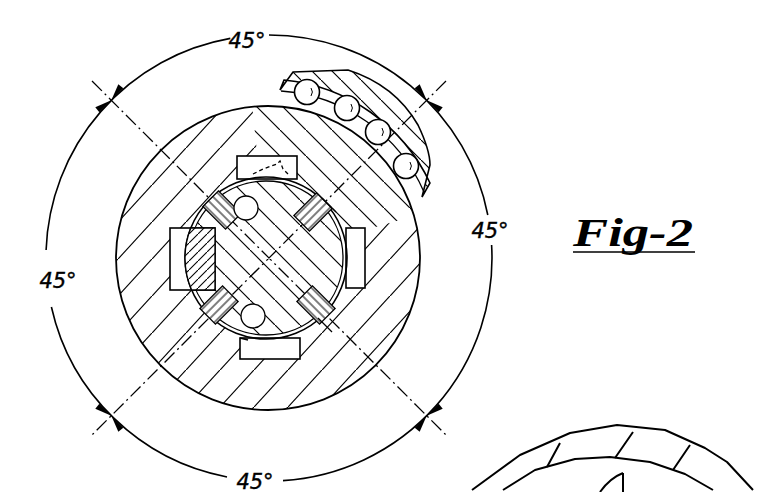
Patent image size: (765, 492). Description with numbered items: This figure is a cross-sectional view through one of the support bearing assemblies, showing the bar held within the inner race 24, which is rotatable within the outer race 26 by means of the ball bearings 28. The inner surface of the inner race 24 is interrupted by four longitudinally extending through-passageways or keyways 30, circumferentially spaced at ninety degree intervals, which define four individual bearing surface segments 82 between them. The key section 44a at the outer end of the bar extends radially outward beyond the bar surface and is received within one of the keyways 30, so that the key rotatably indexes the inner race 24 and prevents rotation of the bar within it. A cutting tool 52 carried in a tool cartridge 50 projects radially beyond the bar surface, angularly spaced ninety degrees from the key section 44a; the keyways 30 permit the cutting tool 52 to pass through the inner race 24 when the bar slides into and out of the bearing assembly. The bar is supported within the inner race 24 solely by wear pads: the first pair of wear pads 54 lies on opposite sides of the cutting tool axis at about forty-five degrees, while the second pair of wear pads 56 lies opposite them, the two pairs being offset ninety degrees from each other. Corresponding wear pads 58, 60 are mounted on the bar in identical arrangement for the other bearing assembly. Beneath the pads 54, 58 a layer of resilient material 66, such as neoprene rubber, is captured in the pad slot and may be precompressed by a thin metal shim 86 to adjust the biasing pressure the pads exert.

The inner race 24 is at (378, 333).
The outer race 26 is at (367, 108).
The ball bearings 28 is at (410, 167).
The keyways 30 is at (250, 165).
The key section 44a is at (190, 288).
The cutting tool 52 is at (267, 156).
The wear pads 54 is at (210, 208).
The wear pads 56 is at (327, 322).
The wear pads 58 is at (328, 208).
The wear pads 60 is at (206, 320).
The resilient material 66 is at (214, 205).
The bearing surface segments 82 is at (248, 340).
The metal shim 86 is at (217, 200).
The tool cartridges 50 is at (544, 490).